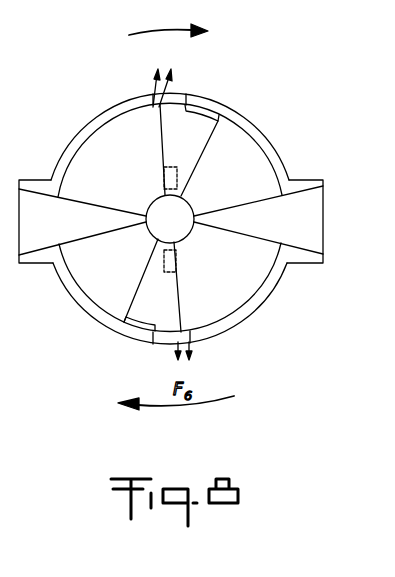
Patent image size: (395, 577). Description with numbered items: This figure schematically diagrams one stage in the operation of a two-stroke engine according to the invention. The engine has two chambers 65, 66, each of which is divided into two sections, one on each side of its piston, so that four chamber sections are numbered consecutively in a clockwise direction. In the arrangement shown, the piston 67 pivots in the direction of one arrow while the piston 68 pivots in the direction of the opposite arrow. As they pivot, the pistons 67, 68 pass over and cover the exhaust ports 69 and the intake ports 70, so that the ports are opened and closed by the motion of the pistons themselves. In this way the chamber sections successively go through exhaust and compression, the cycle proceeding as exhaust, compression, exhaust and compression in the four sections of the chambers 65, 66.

The chamber 65 is at (242, 138).
The chamber 66 is at (240, 288).
The piston 67 is at (196, 99).
The piston 68 is at (135, 308).
The exhaust port 69 is at (164, 88).
The intake port 70 is at (169, 168).